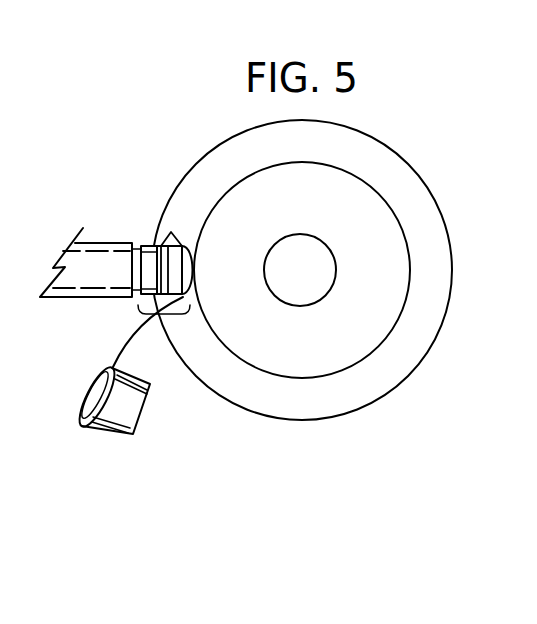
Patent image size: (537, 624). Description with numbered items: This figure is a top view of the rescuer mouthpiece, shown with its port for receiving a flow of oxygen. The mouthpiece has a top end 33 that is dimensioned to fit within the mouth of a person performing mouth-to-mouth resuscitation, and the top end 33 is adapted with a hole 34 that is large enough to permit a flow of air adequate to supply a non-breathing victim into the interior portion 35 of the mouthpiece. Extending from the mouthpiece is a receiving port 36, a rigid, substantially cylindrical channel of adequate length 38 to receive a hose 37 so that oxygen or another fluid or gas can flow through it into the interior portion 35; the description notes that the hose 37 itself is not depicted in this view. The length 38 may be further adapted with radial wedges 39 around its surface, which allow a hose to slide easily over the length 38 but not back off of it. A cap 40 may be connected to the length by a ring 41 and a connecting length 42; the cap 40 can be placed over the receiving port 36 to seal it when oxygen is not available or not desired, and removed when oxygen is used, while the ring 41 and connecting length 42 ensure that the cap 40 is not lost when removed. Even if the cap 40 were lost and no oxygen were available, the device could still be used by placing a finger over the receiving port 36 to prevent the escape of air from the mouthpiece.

The top end 33 is at (430, 298).
The hole 34 is at (318, 273).
The interior portion 35 is at (277, 168).
The receiving port 36 is at (147, 246).
The hose 37 is at (90, 243).
The length 38 is at (163, 314).
The radial wedges 39 is at (171, 232).
The cap 40 is at (122, 438).
The ring 41 is at (193, 267).
The connecting length 42 is at (117, 350).